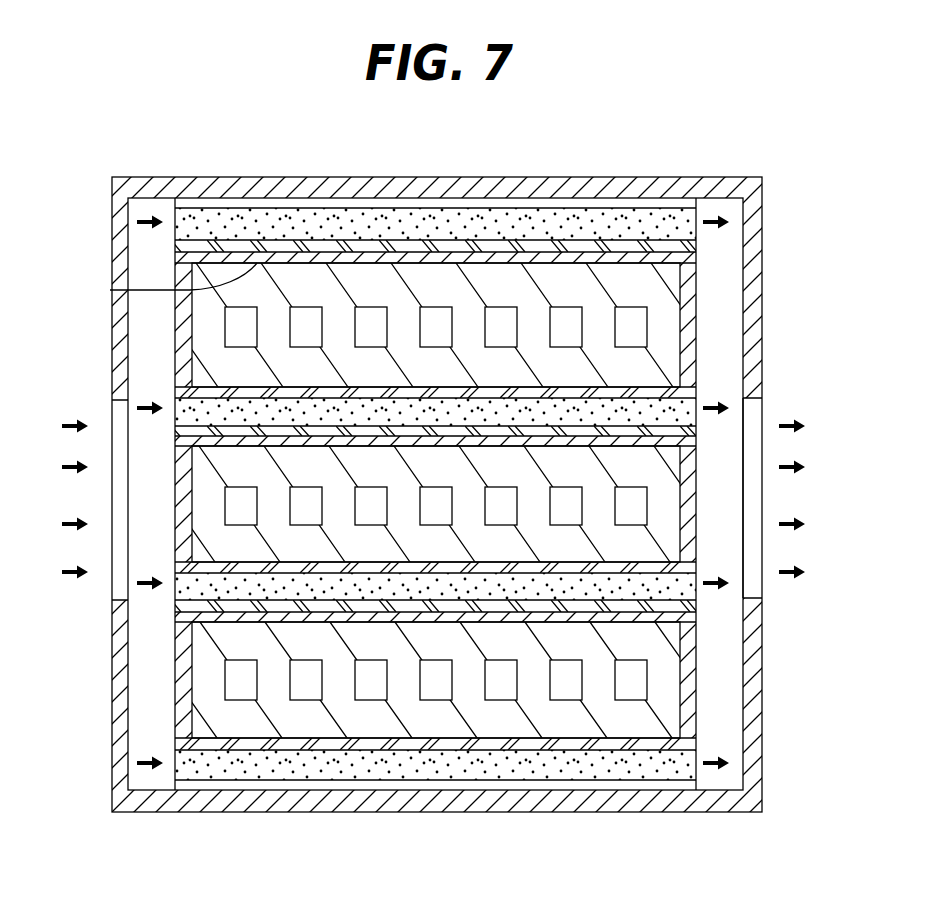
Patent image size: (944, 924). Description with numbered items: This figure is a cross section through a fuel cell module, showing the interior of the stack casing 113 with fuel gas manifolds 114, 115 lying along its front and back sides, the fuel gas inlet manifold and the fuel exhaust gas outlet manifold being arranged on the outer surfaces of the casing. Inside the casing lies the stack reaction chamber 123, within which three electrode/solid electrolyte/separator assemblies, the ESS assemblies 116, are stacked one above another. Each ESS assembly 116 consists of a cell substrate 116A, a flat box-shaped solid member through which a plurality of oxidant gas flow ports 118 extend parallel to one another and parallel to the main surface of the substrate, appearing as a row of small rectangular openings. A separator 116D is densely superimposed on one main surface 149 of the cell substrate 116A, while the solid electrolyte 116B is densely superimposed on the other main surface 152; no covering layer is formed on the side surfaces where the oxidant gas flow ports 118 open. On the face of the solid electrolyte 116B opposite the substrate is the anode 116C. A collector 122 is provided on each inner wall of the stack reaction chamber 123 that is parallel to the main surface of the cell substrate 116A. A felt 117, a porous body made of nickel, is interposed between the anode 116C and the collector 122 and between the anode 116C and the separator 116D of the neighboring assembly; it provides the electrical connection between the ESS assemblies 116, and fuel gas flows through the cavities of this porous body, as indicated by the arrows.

The stack casing 113 is at (719, 187).
The left gas passage 114 is at (148, 659).
The fuel gas inlet manifold 115 is at (725, 711).
The ESS assembly 116 is at (848, 228).
The cell substrate 116A is at (485, 497).
The solid electrolyte 116B is at (690, 302).
The anode 116C is at (688, 249).
The separator 116D is at (760, 398).
The felt 117 is at (682, 220).
The oxidant gas flow ports 118 is at (637, 673).
The collector 122 is at (593, 205).
The stack reaction chamber 123 is at (692, 163).
The main surface 149 is at (757, 412).
The other main surface 152 is at (110, 290).